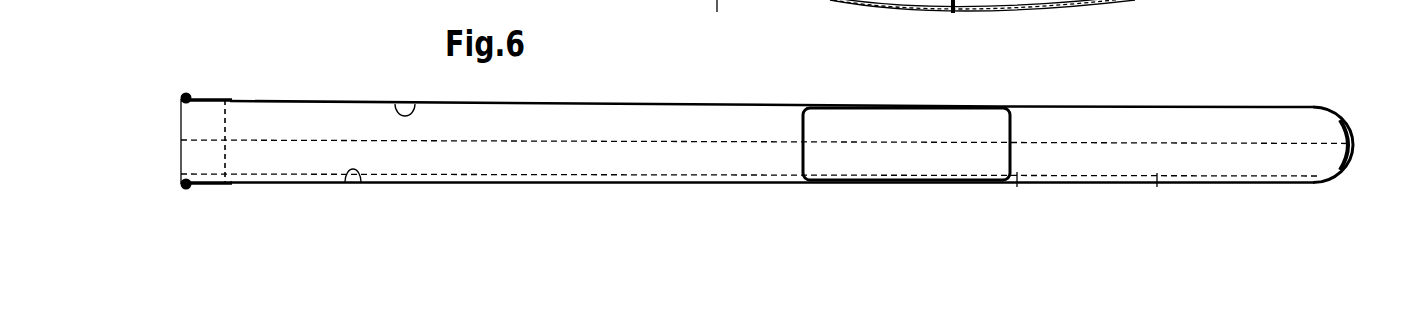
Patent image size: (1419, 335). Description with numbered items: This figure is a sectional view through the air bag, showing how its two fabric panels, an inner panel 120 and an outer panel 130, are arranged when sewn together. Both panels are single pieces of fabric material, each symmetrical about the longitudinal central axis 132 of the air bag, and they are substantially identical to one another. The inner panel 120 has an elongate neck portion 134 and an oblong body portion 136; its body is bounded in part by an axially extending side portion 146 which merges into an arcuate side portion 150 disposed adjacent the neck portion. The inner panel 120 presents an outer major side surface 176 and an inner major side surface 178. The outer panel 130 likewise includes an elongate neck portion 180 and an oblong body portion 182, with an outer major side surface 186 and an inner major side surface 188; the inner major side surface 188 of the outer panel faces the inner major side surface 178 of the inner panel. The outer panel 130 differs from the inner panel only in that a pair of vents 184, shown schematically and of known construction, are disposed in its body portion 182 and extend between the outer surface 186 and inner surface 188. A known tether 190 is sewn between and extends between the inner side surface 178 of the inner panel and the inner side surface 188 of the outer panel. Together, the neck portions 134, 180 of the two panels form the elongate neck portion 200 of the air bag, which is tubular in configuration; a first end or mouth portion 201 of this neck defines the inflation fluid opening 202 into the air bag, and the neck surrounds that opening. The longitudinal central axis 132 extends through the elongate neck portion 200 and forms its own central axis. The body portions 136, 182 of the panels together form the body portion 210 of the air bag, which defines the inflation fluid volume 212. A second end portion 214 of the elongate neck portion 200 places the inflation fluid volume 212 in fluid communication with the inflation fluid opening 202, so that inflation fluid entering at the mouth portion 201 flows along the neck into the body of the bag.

The inner panel 120 is at (630, 101).
The outer panel 130 is at (671, 184).
The longitudinal central axis 132 is at (727, 140).
The elongate neck portion 134 is at (541, 101).
The oblong body portion 136 is at (1122, 106).
The axially extending side portion 146 is at (985, 16).
The arcuate side portion 150 is at (786, 17).
The outer major side surface 176 is at (318, 101).
The inner major side surface 178 is at (409, 113).
The elongate neck portion 180 is at (569, 184).
The oblong body portion 182 is at (1198, 186).
The vents 184 is at (1157, 178).
The outer major side surface 186 is at (298, 185).
The inner major side surface 188 is at (346, 176).
The tether 190 is at (1010, 130).
The elongate neck portion 200 is at (484, 186).
The mouth portion 201 is at (213, 97).
The inflation fluid opening 202 is at (179, 119).
The body portion 210 is at (1055, 196).
The inflation fluid volume 212 is at (1263, 125).
The second end portion 214 is at (187, 95).